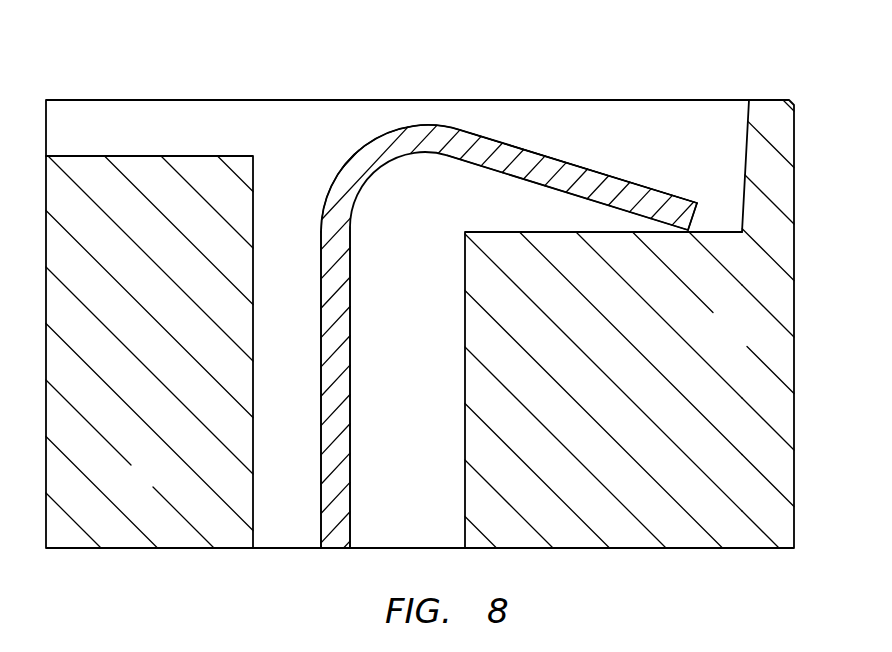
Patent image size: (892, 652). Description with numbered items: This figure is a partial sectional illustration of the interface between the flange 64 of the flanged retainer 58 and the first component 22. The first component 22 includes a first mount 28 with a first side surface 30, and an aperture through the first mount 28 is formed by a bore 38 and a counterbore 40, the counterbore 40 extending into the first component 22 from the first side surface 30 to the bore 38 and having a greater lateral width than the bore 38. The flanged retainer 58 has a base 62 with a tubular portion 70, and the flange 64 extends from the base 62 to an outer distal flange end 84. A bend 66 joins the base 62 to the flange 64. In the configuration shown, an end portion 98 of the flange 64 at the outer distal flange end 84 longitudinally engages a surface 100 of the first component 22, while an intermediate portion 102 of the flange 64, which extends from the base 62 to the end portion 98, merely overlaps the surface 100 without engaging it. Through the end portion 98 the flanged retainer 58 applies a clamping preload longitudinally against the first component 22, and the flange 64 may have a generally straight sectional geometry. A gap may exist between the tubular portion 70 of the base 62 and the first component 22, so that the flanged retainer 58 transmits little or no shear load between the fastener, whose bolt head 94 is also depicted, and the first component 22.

The first component 22 is at (795, 237).
The first mount 28 is at (725, 341).
The first side surface 30 is at (765, 100).
The bore 38 is at (400, 497).
The counterbore 40 is at (625, 146).
The flanged retainer 58 is at (402, 118).
The base 62 is at (351, 408).
The flange 64 is at (573, 141).
The bend 66 is at (377, 142).
The tubular portion 70 is at (352, 360).
The outer distal flange end 84 is at (690, 224).
The bolt head 94 is at (144, 479).
The end portion 98 is at (675, 190).
The surface 100 is at (492, 231).
The intermediate portion 102 is at (533, 147).